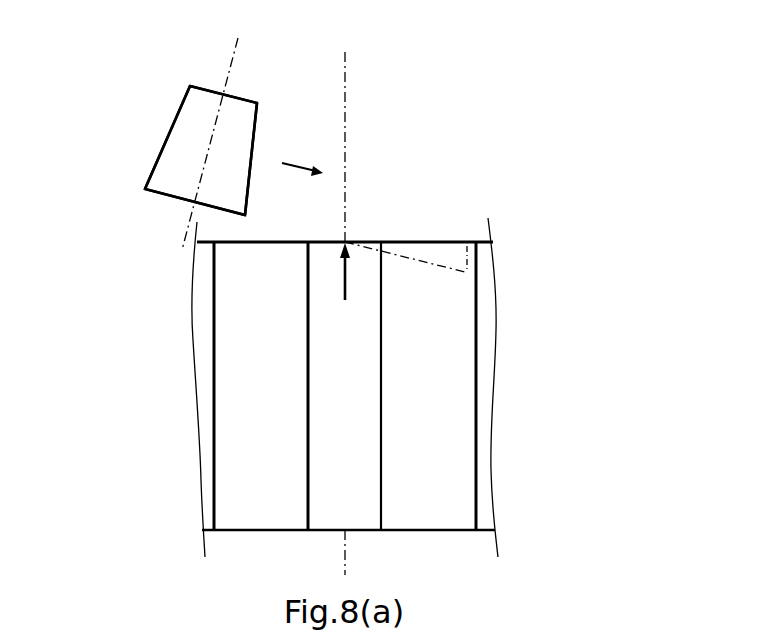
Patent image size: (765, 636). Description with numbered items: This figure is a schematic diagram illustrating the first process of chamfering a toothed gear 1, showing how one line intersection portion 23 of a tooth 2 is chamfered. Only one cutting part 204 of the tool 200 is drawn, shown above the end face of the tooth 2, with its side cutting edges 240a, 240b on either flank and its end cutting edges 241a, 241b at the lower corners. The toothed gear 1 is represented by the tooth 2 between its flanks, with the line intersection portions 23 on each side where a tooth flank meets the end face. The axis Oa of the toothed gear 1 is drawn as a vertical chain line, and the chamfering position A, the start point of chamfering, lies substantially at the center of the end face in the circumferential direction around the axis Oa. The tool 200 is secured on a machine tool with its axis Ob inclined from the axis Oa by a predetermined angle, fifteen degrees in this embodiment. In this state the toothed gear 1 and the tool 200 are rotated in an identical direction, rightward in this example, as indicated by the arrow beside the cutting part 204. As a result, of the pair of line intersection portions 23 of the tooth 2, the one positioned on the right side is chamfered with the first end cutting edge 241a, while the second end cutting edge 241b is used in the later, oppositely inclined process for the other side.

The toothed gear 1 is at (522, 182).
The tooth 2 is at (332, 462).
The line intersection portion 23 is at (248, 243).
The tool 200 is at (156, 80).
The cutting part 204 is at (192, 125).
The first side cutting edge 240a is at (254, 135).
The second side cutting edge 240b is at (167, 138).
The first end cutting edge 241a is at (245, 216).
The second end cutting edge 241b is at (145, 190).
The axis of the toothed gear Oa is at (346, 52).
The axis of the tool Ob is at (240, 40).
The chamfering position A is at (346, 285).